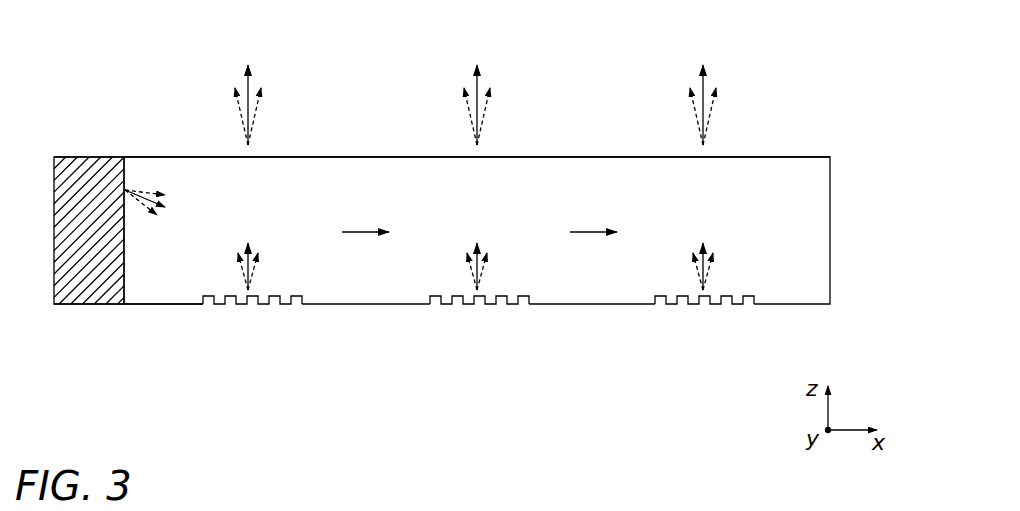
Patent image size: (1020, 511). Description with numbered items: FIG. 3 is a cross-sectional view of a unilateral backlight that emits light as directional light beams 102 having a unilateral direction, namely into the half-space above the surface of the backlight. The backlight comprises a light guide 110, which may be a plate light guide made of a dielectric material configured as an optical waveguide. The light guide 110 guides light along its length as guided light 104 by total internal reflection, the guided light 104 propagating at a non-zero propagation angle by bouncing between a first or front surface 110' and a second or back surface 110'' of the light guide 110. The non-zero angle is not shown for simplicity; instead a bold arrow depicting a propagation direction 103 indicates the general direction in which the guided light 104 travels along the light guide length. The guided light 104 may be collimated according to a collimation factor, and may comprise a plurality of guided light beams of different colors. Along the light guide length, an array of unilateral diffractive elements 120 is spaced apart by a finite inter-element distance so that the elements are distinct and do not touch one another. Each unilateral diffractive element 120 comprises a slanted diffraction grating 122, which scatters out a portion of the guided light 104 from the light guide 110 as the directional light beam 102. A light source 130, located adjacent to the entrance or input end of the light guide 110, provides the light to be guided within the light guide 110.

The directional light beams 102 is at (283, 100).
The propagation direction 103 is at (586, 210).
The guided light 104 is at (157, 186).
The light guide 110 is at (489, 230).
The first surface 110' is at (519, 139).
The second surface 110'' is at (521, 323).
The unilateral diffractive elements 120 is at (705, 316).
The slanted diffraction grating 122 is at (260, 317).
The light source 130 is at (90, 318).